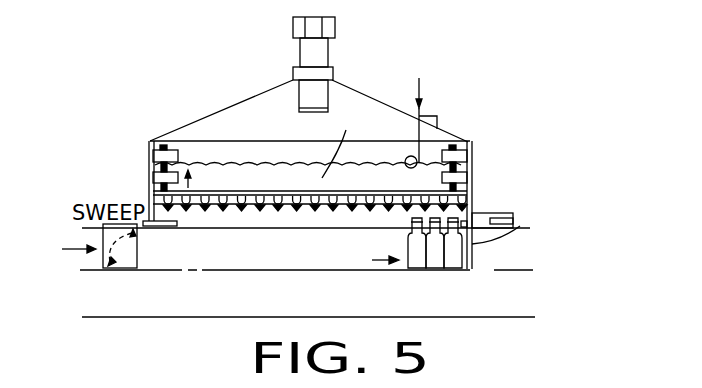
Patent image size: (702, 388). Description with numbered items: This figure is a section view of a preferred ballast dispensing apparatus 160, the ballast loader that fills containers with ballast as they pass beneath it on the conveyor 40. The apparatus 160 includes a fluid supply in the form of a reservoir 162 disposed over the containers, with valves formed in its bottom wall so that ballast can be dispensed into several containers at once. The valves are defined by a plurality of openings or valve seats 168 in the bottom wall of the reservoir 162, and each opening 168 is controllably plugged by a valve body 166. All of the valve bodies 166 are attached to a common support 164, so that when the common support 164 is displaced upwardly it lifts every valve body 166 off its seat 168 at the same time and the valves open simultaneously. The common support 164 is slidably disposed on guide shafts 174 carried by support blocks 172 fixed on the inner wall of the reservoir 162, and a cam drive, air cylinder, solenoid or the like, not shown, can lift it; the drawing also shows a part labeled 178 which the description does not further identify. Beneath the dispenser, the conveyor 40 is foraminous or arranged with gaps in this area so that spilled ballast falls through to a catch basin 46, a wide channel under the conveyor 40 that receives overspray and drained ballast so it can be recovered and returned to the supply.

The ballast dispensing apparatus 160 is at (210, 106).
The reservoir 162 is at (472, 145).
The common support 164 is at (228, 180).
The valve bodies 166 is at (205, 208).
The openings or valve seats 168 is at (278, 208).
The support blocks 172 is at (147, 182).
The guide shafts 174 is at (182, 152).
The guide bracket 178 is at (516, 226).
The conveyor 40 is at (486, 266).
The catch basin 46 is at (458, 317).